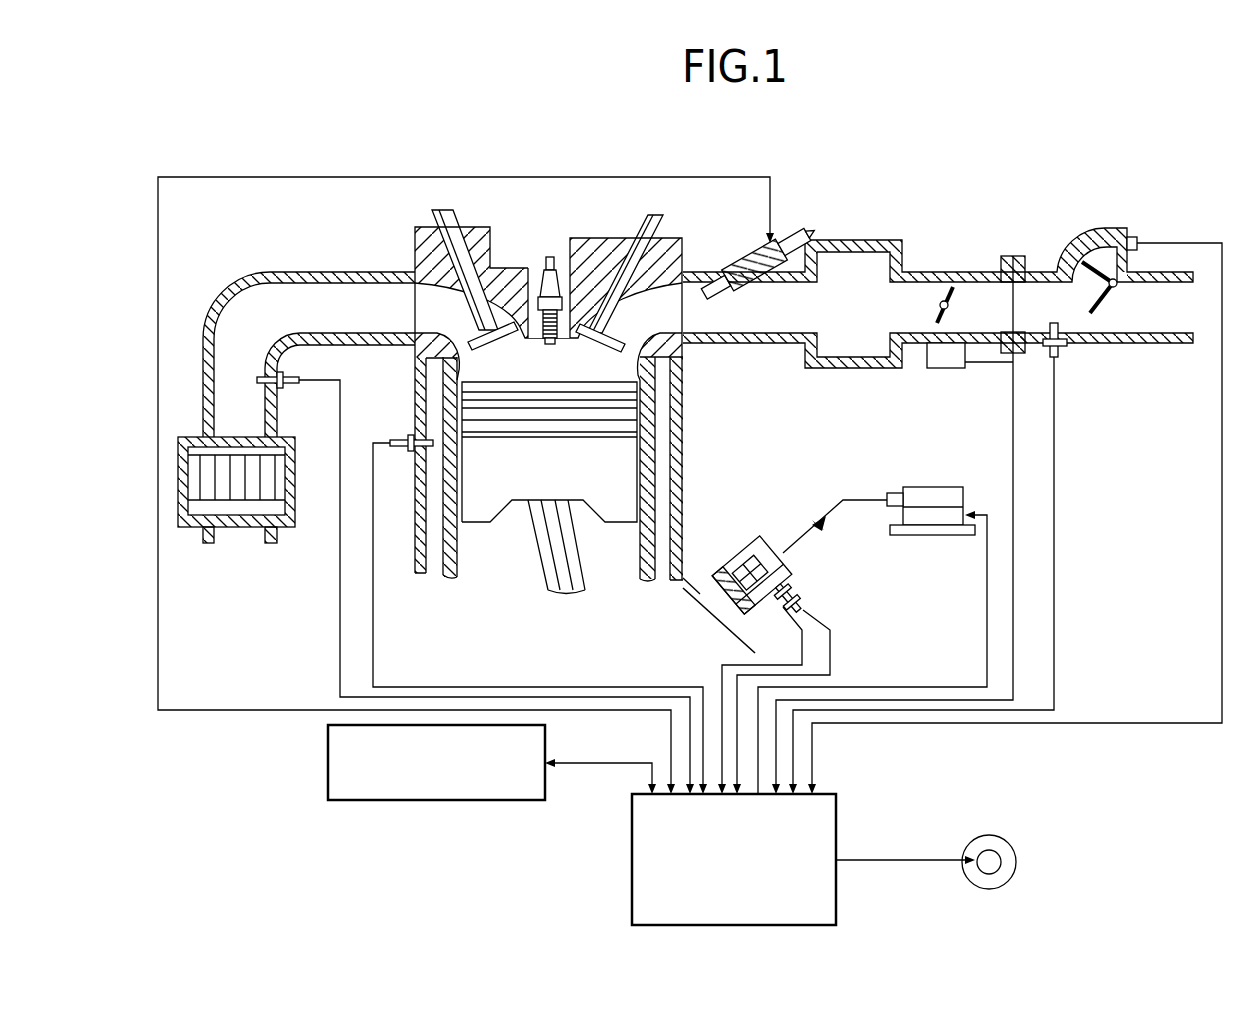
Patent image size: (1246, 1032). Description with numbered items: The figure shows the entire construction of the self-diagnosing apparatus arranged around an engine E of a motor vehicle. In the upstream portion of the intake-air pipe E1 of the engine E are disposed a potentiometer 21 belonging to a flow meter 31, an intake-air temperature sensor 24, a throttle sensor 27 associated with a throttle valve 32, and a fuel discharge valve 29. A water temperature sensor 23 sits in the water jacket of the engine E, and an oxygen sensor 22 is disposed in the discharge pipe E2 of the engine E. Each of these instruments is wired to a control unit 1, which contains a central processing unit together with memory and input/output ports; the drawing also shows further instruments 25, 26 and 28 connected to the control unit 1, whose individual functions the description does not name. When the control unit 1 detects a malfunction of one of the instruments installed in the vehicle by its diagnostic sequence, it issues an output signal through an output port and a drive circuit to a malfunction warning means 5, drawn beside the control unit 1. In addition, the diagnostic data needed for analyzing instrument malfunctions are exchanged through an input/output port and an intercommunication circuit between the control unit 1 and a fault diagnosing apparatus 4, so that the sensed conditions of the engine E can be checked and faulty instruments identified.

The control unit 1 is at (838, 805).
The fault diagnosing apparatus 4 is at (455, 800).
The malfunction warning means 5 is at (1008, 845).
The potentiometer 21 is at (1137, 240).
The O2 sensor 22 is at (284, 386).
The water temperature sensor 23 is at (388, 438).
The intake-air temperature sensor 24 is at (1058, 352).
The crank angle sensor 25 is at (800, 605).
The knock sensor 26 is at (780, 615).
The throttle sensor 27 is at (946, 370).
The actuator 28 is at (935, 488).
The fuel discharge valve 29 is at (787, 233).
The flow meter 31 is at (1094, 260).
The throttle valve 32 is at (952, 297).
The engine E is at (497, 243).
The intake-air pipe E1 is at (930, 271).
The discharge pipe E2 is at (281, 272).